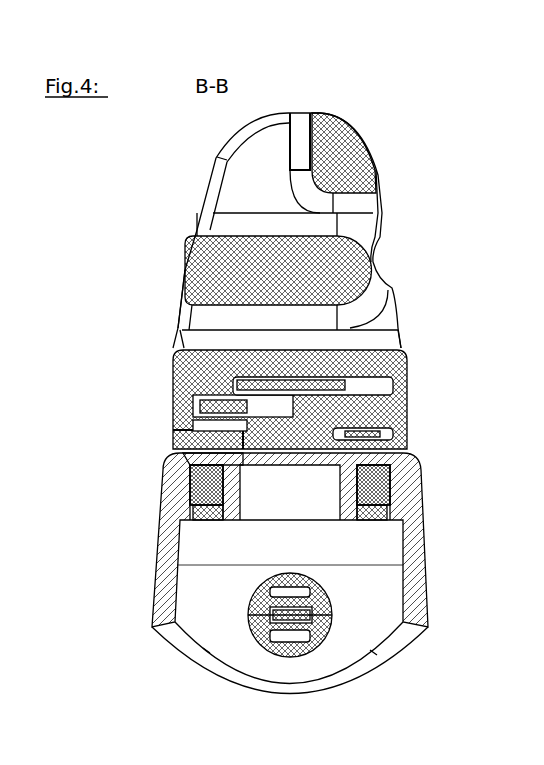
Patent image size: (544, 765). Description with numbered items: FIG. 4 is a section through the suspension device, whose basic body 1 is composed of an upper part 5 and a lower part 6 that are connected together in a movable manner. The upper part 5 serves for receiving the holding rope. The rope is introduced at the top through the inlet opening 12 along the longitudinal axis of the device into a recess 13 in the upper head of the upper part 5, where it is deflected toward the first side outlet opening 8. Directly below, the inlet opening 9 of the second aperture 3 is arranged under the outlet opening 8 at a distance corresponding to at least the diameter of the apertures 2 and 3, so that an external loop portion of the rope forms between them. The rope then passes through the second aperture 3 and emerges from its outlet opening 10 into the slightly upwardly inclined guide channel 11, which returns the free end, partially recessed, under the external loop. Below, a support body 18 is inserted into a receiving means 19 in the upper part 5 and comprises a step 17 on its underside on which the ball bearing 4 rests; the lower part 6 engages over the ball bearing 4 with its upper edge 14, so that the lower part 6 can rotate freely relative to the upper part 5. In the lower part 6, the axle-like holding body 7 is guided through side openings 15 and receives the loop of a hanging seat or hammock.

The basic body 1 is at (403, 93).
The aperture 2 is at (422, 217).
The second aperture 3 is at (418, 314).
The ball bearing 4 is at (202, 504).
The upper part 5 is at (410, 422).
The lower part 6 is at (424, 522).
The axle-like holding body 7 is at (323, 630).
The first side outlet opening 8 is at (376, 202).
The inlet opening 9 is at (404, 340).
The outlet opening 10 is at (172, 327).
The guide channel 11 is at (379, 262).
The inlet opening 12 is at (298, 110).
The recess 13 is at (282, 199).
The upper edge 14 is at (202, 453).
The side openings 15 is at (328, 583).
The step 17 is at (222, 526).
The support body 18 is at (320, 453).
The receiving means 19 is at (200, 387).